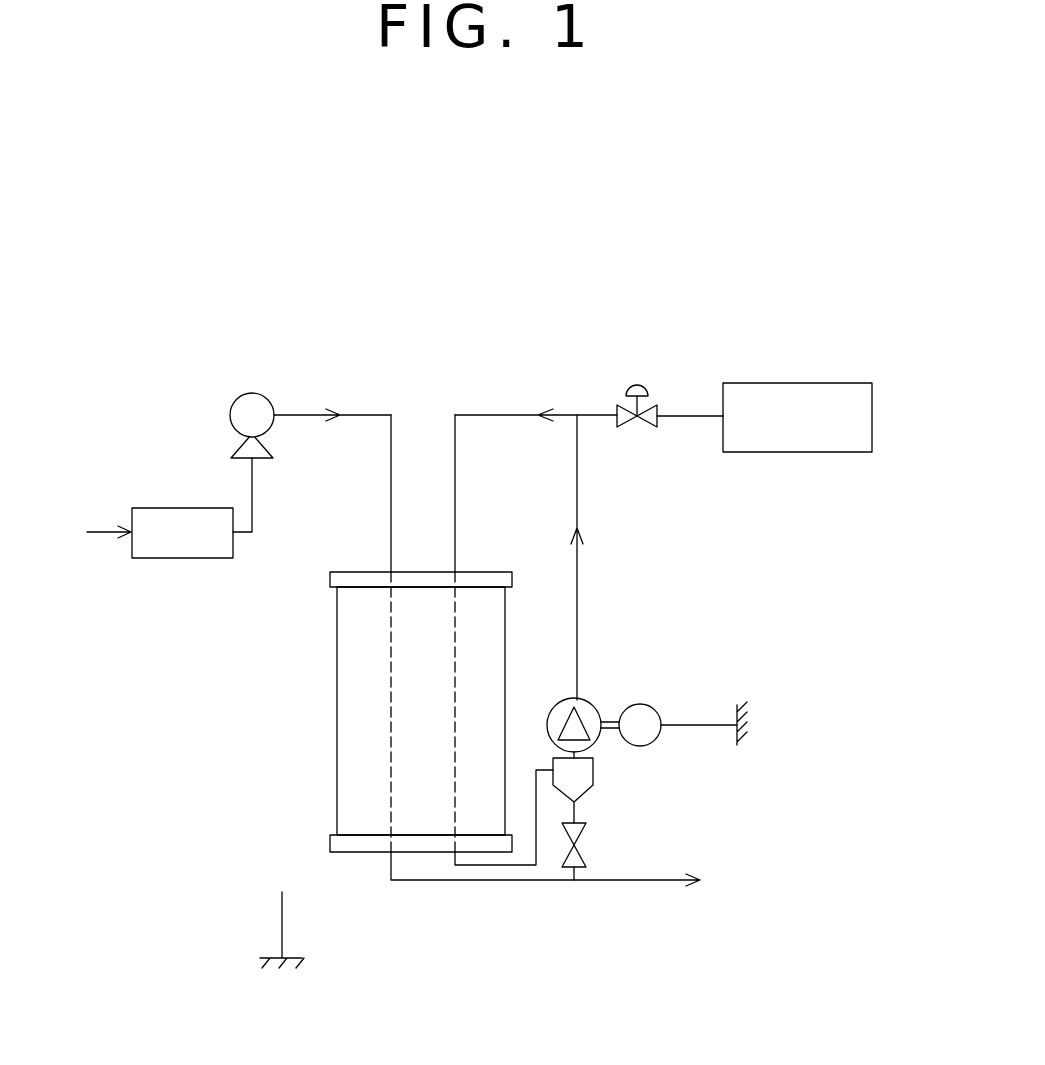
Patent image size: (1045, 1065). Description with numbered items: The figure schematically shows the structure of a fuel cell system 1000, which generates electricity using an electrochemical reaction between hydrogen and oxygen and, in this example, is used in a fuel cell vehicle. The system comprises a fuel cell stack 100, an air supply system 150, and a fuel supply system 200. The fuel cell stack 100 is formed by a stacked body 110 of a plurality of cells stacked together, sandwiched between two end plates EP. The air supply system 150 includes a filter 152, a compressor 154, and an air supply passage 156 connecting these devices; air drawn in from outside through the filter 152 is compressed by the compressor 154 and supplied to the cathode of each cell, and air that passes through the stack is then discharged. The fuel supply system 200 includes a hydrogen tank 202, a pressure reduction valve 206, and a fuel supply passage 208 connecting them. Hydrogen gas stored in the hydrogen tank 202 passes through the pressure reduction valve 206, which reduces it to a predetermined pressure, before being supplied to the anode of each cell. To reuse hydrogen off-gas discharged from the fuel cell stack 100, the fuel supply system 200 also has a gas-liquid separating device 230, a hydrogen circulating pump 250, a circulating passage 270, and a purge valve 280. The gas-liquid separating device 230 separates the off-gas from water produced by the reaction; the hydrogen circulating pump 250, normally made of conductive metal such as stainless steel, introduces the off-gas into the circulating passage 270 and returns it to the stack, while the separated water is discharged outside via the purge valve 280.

The fuel cell system 1000 is at (738, 232).
The fuel cell stack 100 is at (227, 572).
The stacked body 110 is at (325, 588).
The end plate EP is at (332, 579).
The air supply system 150 is at (90, 352).
The filter 152 is at (185, 559).
The compressor 154 is at (230, 412).
The air supply passage 156 is at (371, 416).
The fuel supply system 200 is at (457, 352).
The hydrogen tank 202 is at (798, 453).
The pressure reduction valve 206 is at (634, 428).
The fuel supply passage 208 is at (513, 418).
The gas-liquid separating device 230 is at (594, 773).
The hydrogen circulating pump 250 is at (585, 702).
The circulating passage 270 is at (578, 567).
The purge valve 280 is at (586, 838).